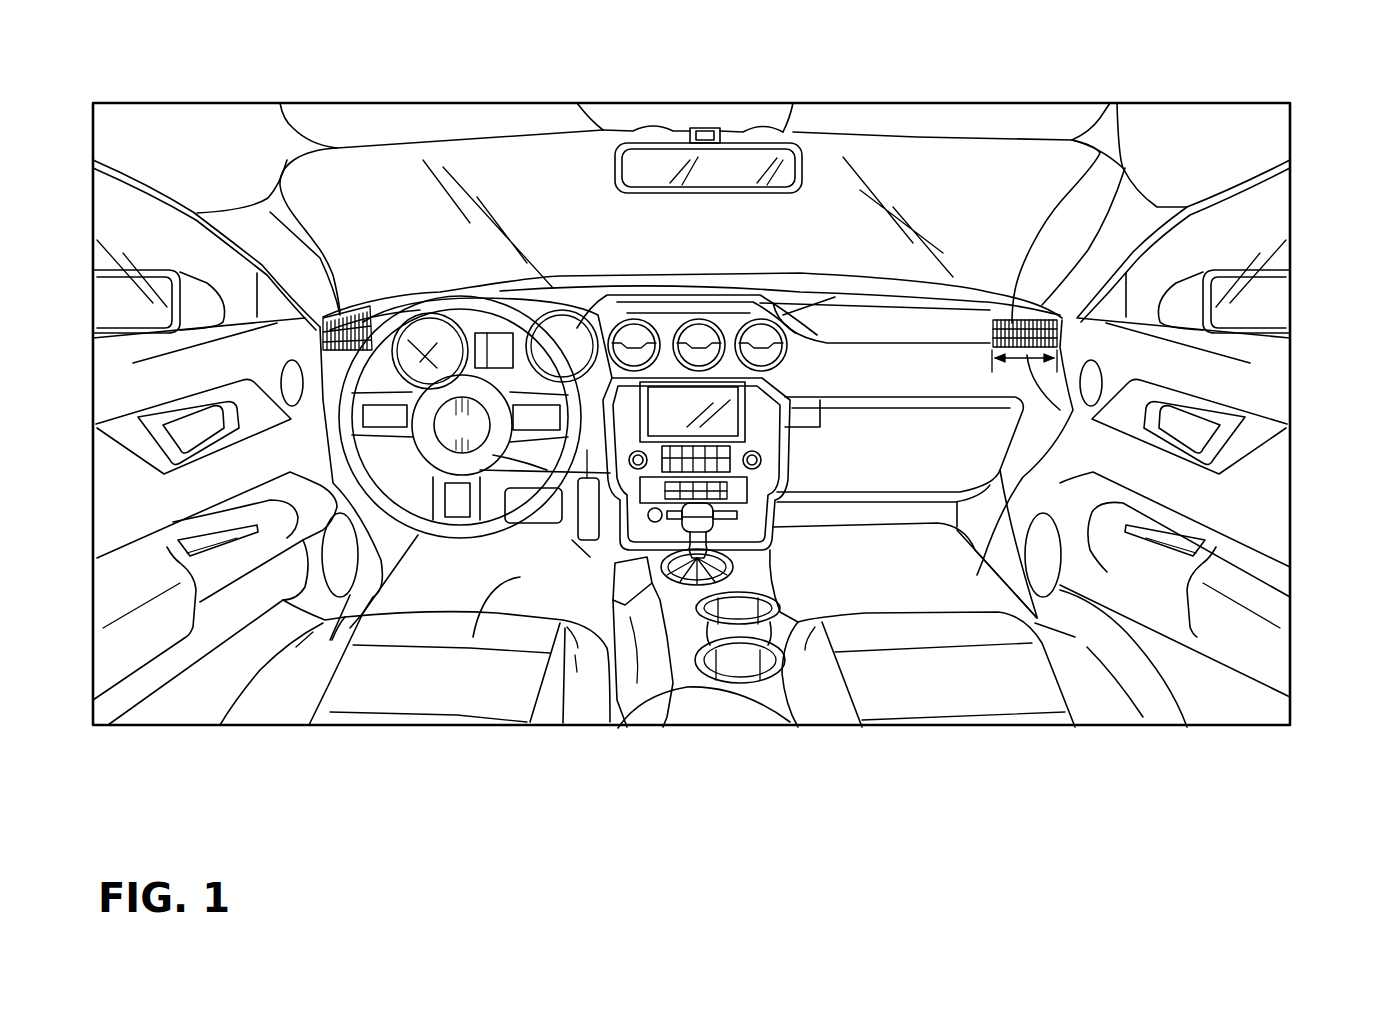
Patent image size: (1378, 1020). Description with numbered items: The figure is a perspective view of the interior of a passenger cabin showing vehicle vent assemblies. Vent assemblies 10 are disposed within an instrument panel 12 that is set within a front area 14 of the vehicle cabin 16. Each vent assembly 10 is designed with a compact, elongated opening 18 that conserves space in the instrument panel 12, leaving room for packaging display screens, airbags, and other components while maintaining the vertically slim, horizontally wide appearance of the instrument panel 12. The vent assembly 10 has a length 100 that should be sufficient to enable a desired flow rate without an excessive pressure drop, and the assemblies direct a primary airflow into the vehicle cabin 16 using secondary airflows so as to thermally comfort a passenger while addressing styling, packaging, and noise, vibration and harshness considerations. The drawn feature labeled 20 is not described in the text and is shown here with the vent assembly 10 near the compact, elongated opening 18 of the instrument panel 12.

The vent assembly 10 is at (366, 310).
The instrument panel 12 is at (840, 368).
The front area 14 is at (823, 462).
The vehicle cabin 16 is at (520, 575).
The compact, elongated opening 18 is at (310, 322).
The speaker grille 20 is at (323, 325).
The length 100 is at (1290, 483).